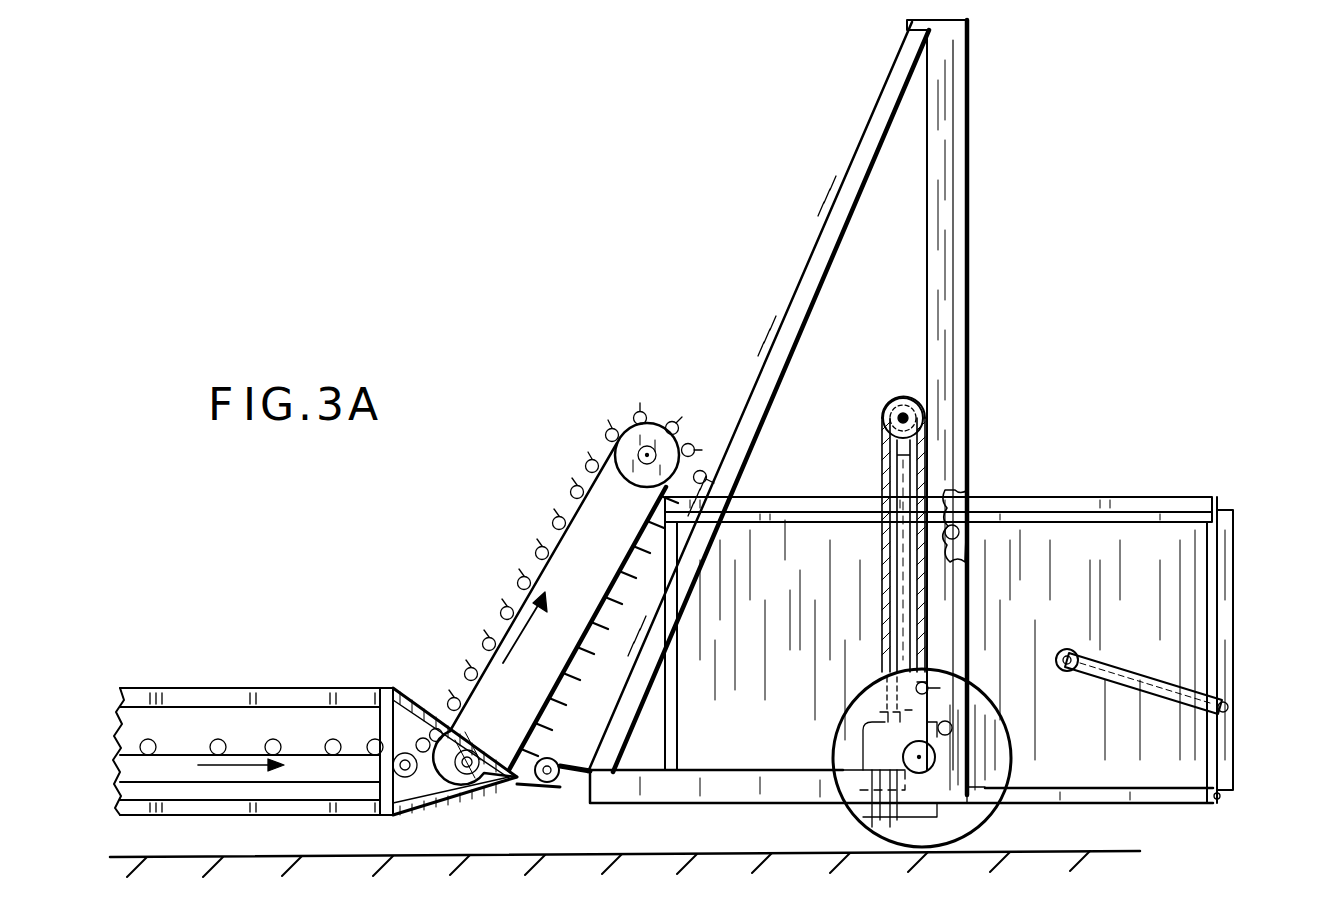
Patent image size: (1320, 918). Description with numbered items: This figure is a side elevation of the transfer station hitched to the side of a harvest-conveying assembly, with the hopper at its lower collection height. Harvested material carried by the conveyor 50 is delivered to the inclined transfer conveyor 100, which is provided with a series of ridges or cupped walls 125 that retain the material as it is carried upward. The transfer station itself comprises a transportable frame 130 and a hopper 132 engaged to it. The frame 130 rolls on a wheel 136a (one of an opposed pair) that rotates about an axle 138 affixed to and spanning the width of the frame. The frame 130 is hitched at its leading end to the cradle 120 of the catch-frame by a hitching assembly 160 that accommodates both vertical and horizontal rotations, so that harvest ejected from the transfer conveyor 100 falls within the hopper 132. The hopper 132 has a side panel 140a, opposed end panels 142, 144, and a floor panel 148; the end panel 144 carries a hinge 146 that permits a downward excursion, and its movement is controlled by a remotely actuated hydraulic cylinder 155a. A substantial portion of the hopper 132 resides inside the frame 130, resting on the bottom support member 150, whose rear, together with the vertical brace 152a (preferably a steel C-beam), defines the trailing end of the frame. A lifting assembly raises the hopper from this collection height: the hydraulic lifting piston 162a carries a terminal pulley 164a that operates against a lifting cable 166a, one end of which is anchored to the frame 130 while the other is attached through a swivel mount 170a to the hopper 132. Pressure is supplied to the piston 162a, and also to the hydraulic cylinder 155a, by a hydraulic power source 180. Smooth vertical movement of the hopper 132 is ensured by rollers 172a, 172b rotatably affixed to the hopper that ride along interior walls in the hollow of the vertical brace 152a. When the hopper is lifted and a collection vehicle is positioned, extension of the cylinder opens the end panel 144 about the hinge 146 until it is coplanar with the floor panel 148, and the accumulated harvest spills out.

The conveyor 50 is at (120, 776).
The cradle 120 is at (297, 806).
The transfer conveyor 100 is at (595, 515).
The ridges or cupped walls 125 is at (535, 577).
The end panel 142 is at (665, 715).
The hitching assembly 160 is at (543, 793).
The bottom support member 150 is at (715, 802).
The transportable frame 130 is at (818, 407).
The vertical brace 152a is at (955, 262).
The hopper 132 is at (986, 601).
The side panel 140a is at (1150, 545).
The end panel 144 is at (1226, 688).
The hinge 146 is at (1222, 795).
The floor panel 148 is at (1107, 796).
The hydraulic cylinder 155a is at (1180, 629).
The lifting cable 166a is at (884, 572).
The hydraulic lifting piston 162a is at (900, 487).
The terminal pulley 164a is at (898, 400).
The roller 172a is at (1060, 469).
The wheel 136a is at (1088, 839).
The axle 138 is at (903, 750).
The roller 172b is at (1071, 724).
The swivel mount 170a is at (962, 690).
The hydraulic power source 180 is at (880, 830).